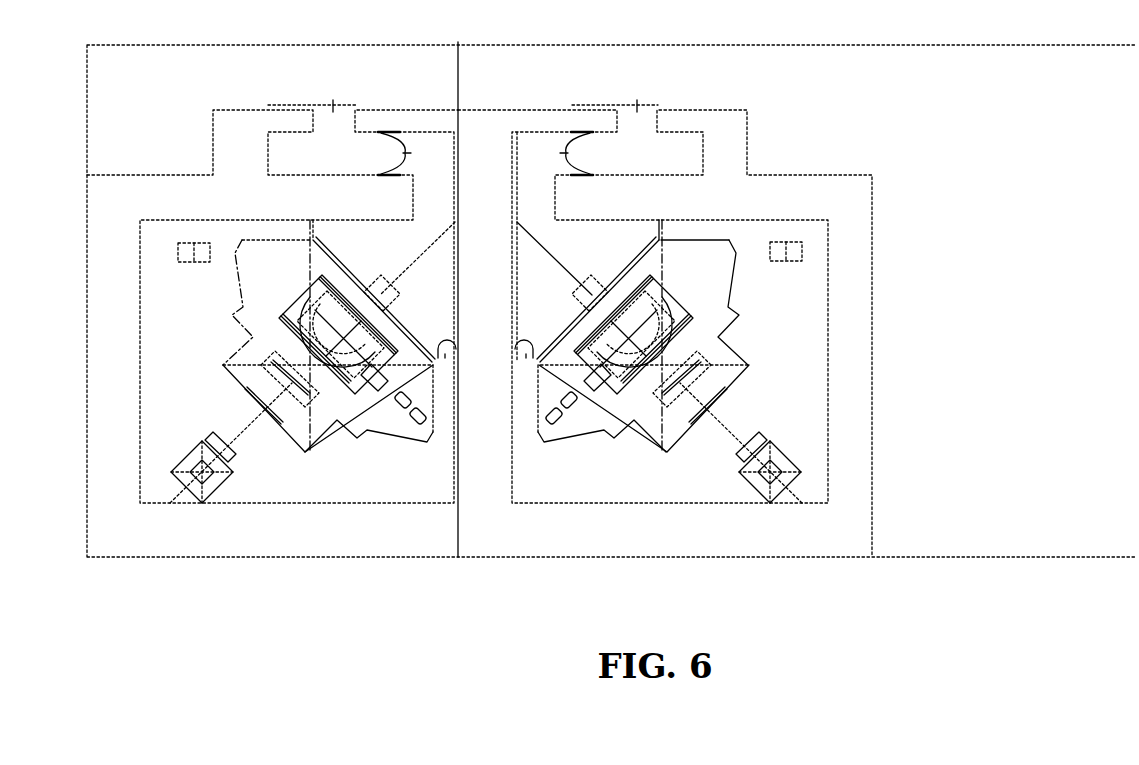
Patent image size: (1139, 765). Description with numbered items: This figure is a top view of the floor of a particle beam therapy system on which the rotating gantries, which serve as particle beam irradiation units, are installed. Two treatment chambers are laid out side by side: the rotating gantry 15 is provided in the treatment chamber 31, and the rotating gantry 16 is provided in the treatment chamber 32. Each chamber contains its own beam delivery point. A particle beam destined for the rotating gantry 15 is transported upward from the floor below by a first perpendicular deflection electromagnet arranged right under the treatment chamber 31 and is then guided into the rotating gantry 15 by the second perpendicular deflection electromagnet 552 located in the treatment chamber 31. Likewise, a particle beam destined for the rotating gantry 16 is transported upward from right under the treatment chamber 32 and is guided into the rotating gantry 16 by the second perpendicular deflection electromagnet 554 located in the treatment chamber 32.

The treatment chamber 32 is at (222, 233).
The treatment chamber 31 is at (806, 295).
The rotating gantry 16 is at (348, 393).
The rotating gantry 15 is at (652, 412).
The second perpendicular deflection electromagnet 554 is at (230, 458).
The second perpendicular deflection electromagnet 552 is at (757, 443).